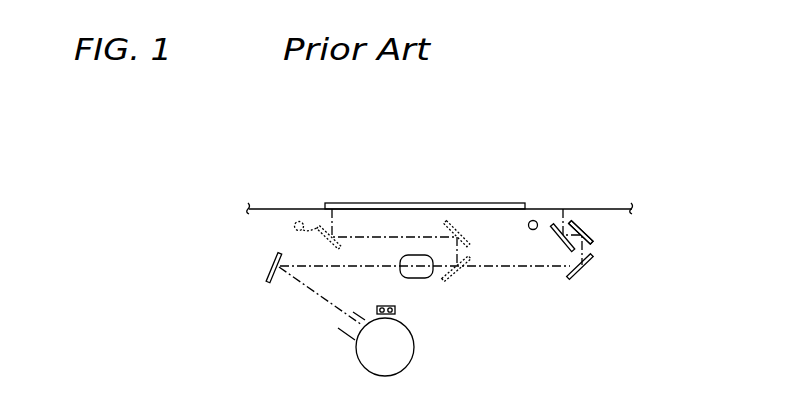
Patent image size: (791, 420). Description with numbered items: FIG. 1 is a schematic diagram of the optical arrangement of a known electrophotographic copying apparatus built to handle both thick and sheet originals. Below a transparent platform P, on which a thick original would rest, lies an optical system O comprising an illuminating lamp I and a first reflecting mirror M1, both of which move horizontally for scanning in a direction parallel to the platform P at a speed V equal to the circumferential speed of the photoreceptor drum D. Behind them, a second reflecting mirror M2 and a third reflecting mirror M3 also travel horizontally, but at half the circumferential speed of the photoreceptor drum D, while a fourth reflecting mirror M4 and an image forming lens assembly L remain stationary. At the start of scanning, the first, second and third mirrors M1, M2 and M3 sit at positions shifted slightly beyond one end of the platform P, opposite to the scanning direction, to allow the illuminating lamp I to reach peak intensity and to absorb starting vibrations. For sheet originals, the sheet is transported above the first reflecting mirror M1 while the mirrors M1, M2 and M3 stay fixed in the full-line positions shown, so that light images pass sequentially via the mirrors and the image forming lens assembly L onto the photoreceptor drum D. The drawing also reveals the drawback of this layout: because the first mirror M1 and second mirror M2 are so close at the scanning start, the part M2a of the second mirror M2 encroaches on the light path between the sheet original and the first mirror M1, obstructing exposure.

The transparent platform P is at (480, 203).
The illuminating lamp I is at (535, 224).
The first reflecting mirror M1 is at (553, 224).
The part of the second mirror M2a is at (577, 224).
The second reflecting mirror M2 is at (590, 239).
The third reflecting mirror M3 is at (591, 257).
The optical system O is at (593, 271).
The fourth reflecting mirror M4 is at (269, 282).
The image forming lens assembly L is at (418, 278).
The photoreceptor drum D is at (414, 347).
The speed V is at (338, 222).